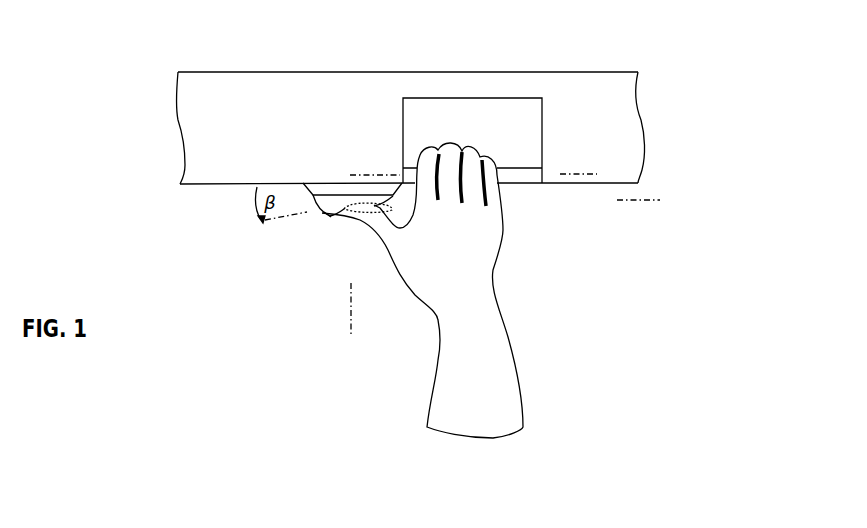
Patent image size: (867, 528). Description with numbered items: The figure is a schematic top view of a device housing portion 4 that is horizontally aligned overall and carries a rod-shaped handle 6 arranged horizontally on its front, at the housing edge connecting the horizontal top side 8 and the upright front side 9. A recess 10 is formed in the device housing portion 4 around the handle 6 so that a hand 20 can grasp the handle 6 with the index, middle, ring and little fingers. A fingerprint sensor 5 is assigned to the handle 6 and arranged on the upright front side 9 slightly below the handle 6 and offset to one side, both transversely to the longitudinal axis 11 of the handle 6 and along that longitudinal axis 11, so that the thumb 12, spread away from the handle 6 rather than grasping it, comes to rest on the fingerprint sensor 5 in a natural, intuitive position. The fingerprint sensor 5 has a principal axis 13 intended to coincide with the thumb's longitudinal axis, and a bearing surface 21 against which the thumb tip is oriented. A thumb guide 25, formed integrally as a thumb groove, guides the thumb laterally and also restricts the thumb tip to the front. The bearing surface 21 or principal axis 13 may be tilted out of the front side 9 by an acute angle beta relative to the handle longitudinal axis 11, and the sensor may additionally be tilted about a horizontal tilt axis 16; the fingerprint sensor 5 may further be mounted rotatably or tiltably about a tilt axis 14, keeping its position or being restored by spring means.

The device housing portion 4 is at (570, 78).
The fingerprint sensor 5 is at (333, 219).
The handle 6 is at (515, 180).
The horizontal top side 8 is at (230, 186).
The upright front side 9 is at (194, 187).
The recess 10 is at (530, 152).
The longitudinal axis 11 is at (373, 174).
The thumb 12 is at (358, 220).
The principal axis 13 is at (307, 213).
The tilt axis 14 is at (350, 305).
The horizontal tilt axis 16 is at (647, 202).
The hand 20 is at (488, 252).
The bearing surface 21 is at (350, 195).
The thumb guide 25 is at (321, 218).